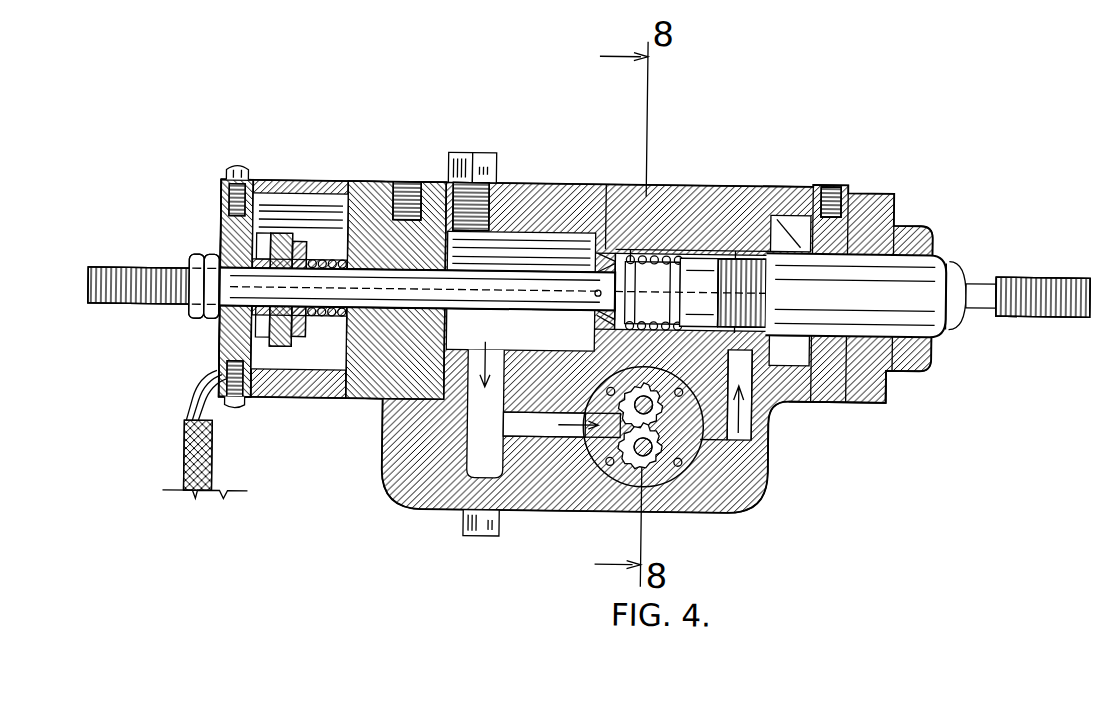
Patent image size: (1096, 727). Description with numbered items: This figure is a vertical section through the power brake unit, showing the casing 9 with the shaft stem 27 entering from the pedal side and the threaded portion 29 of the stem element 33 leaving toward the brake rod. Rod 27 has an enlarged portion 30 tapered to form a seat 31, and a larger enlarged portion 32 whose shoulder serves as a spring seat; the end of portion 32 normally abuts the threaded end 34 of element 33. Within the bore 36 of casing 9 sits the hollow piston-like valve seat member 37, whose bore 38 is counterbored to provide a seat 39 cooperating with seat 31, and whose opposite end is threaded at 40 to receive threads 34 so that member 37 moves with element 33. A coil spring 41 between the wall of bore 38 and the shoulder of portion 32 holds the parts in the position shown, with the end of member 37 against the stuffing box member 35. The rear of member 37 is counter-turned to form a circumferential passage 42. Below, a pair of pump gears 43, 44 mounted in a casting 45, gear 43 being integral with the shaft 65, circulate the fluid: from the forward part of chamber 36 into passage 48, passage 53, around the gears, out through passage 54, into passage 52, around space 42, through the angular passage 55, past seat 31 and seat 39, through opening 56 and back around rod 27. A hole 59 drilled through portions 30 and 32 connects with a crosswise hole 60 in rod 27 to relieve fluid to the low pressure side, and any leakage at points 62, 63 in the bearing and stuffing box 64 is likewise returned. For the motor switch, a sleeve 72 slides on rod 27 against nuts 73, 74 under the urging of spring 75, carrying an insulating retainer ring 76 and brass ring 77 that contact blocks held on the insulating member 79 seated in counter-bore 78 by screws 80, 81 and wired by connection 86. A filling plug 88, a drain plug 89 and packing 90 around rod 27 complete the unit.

The casing 9 is at (378, 183).
The shaft stem 27 is at (95, 290).
The threaded portion 29 is at (1036, 280).
The enlarged portion 30 is at (672, 262).
The seat 31 is at (600, 322).
The enlarged portion 32 is at (738, 290).
The stem element 33 is at (928, 262).
The threaded end 34 is at (768, 288).
The stuffing box member 35 is at (806, 372).
The bore 36 is at (520, 232).
The valve seat member 37 is at (610, 183).
The bore 38 is at (631, 248).
The seat 39 is at (598, 250).
The threads 40 is at (771, 212).
The coil spring 41 is at (657, 258).
The passage 42 is at (738, 250).
The pump gear 43 is at (692, 418).
The pump gear 44 is at (657, 446).
The casting 45 is at (702, 453).
The passage 48 is at (470, 442).
The passage 52 is at (743, 437).
The passage 53 is at (542, 440).
The passage 54 is at (742, 442).
The angular passage 55 is at (694, 262).
The opening 56 is at (592, 318).
The hole 59 is at (638, 290).
The pin 60 is at (593, 292).
The leakage point 62 is at (786, 258).
The leakage point 63 is at (812, 183).
The bearing and stuffing box 64 is at (870, 192).
The shaft 65 is at (624, 398).
The sleeve 72 is at (318, 242).
The nut 73 is at (210, 262).
The nut 74 is at (194, 262).
The spring 75 is at (344, 262).
The insulating retainer ring 76 is at (297, 252).
The brass ring 77 is at (280, 240).
The counter-bore 78 is at (262, 200).
The insulating member 79 is at (228, 350).
The screw 80 is at (232, 175).
The screw 81 is at (242, 407).
The connection 86 is at (190, 404).
The plug 88 is at (478, 165).
The drain plug 89 is at (488, 538).
The packing 90 is at (401, 183).